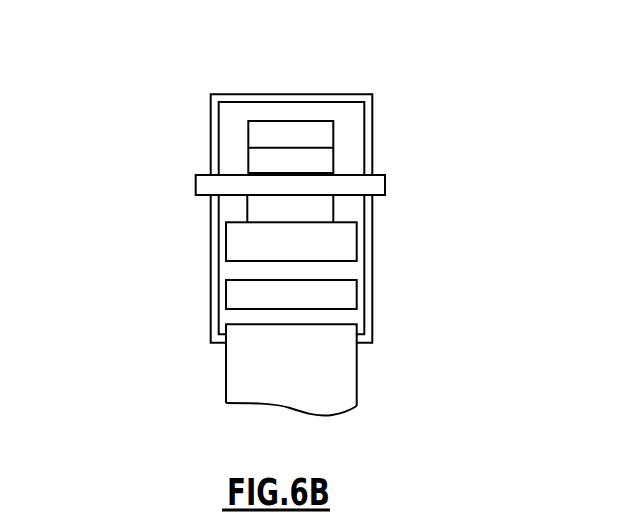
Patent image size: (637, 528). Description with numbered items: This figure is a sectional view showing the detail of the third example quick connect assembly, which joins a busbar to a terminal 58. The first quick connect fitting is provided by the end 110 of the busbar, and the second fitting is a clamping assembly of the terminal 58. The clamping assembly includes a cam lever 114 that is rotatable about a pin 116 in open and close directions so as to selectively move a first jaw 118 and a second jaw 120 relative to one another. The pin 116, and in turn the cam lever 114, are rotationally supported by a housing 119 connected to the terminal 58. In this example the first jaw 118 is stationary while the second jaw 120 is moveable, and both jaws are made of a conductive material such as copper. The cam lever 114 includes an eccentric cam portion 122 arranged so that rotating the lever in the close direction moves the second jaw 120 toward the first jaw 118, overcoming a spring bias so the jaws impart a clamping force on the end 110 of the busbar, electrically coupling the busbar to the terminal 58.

The terminal 58 is at (242, 377).
The end of the busbar 110 is at (330, 295).
The cam lever 114 is at (258, 110).
The pin 116 is at (375, 186).
The first jaw 118 is at (239, 322).
The housing 119 is at (210, 147).
The second jaw 120 is at (240, 243).
The eccentric cam portion 122 is at (261, 209).